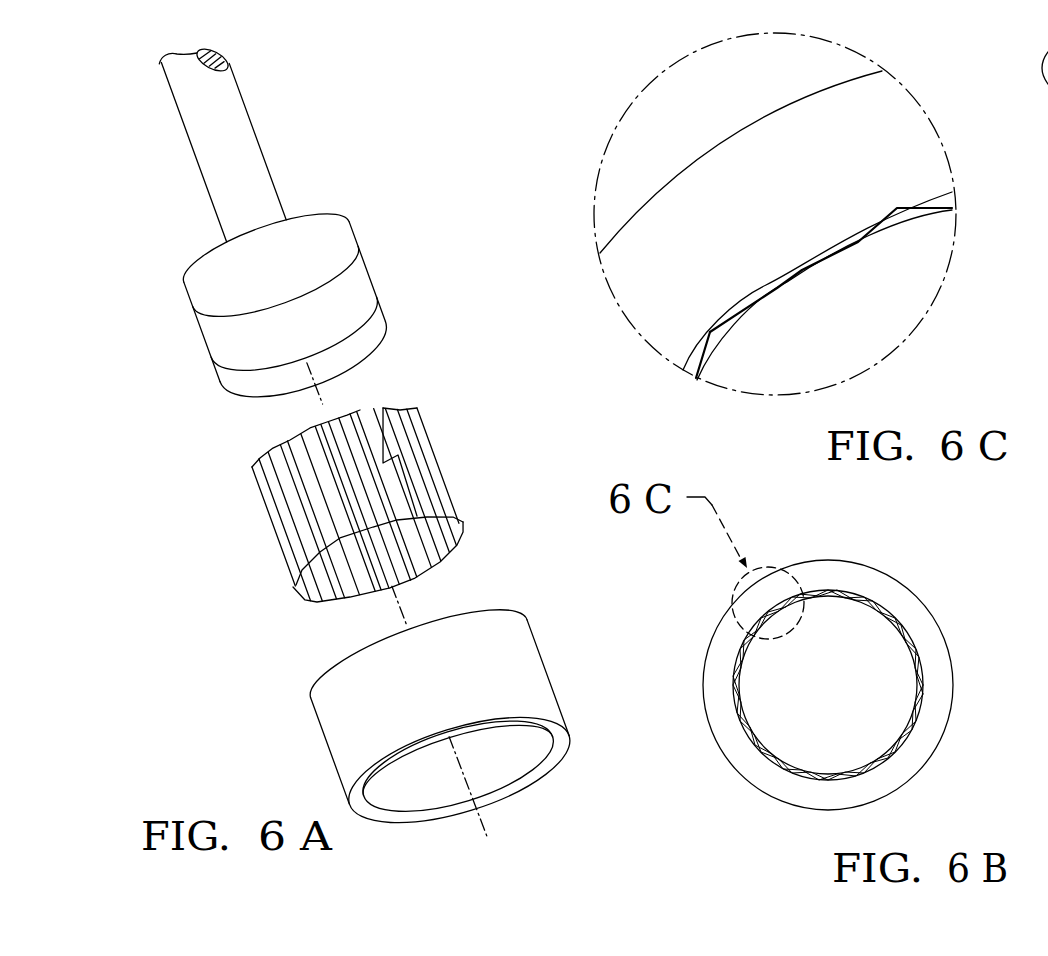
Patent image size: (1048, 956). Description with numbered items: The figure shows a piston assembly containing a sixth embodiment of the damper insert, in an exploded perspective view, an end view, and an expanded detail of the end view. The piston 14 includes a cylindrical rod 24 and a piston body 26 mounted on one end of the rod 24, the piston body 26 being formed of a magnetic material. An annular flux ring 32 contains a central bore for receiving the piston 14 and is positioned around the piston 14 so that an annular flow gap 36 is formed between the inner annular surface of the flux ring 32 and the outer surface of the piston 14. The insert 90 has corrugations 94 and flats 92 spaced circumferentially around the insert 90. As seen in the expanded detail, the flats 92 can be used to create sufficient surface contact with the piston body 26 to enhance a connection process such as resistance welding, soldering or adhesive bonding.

In FIG. 6A, the piston 14 is at (368, 265).
In FIG. 6A, the cylindrical rod 24 is at (235, 118).
In FIG. 6C, the piston body 26 is at (880, 290).
In FIG. 6A, the annular flux ring 32 is at (533, 667).
In FIG. 6B, the annular flux ring 32 is at (905, 760).
In FIG. 6C, the annular flux ring 32 is at (876, 102).
In FIG. 6C, the annular flow gap 36 is at (948, 189).
In FIG. 6A, the insert 90 is at (450, 471).
In FIG. 6A, the flats 92 is at (330, 525).
In FIG. 6C, the flats 92 is at (776, 292).
In FIG. 6A, the corrugations 94 is at (332, 447).
In FIG. 6C, the corrugations 94 is at (707, 329).